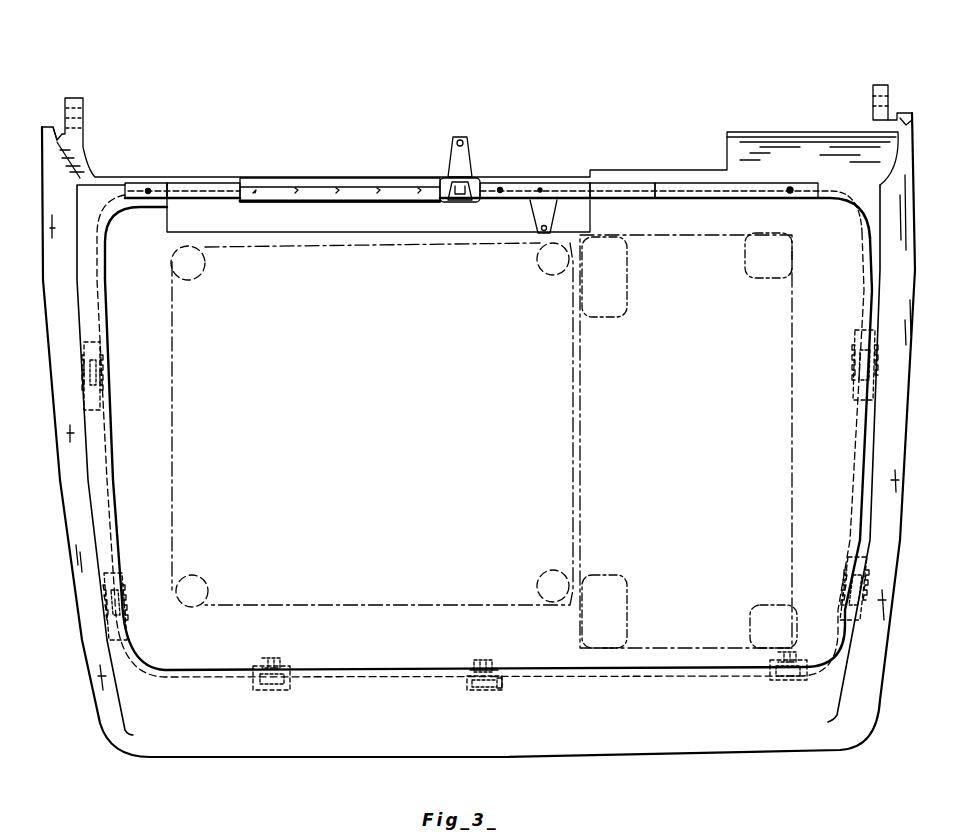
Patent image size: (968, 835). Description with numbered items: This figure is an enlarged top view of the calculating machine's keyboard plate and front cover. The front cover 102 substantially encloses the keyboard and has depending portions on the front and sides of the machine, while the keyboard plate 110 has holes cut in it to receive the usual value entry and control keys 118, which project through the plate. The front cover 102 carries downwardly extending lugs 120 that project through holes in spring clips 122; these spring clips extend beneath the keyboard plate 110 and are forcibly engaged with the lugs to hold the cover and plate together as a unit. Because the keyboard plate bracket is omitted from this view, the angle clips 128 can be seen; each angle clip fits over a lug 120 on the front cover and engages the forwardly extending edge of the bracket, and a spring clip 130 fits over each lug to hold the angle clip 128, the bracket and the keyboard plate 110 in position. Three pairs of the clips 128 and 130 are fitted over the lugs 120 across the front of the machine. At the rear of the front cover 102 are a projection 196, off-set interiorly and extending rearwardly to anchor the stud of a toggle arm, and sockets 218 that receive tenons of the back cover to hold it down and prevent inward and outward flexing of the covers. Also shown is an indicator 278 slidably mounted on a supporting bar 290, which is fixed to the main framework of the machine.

The front cover 102 is at (200, 738).
The keyboard plate 110 is at (373, 662).
The value entry and control keys 118 is at (562, 276).
The lugs 120 is at (483, 690).
The spring clips 122 is at (105, 378).
The angle clips 128 is at (484, 660).
The spring clip 130 is at (500, 684).
The projection 196 is at (890, 101).
The sockets 218 is at (908, 126).
The indicator 278 is at (458, 158).
The supporting bar 290 is at (560, 184).